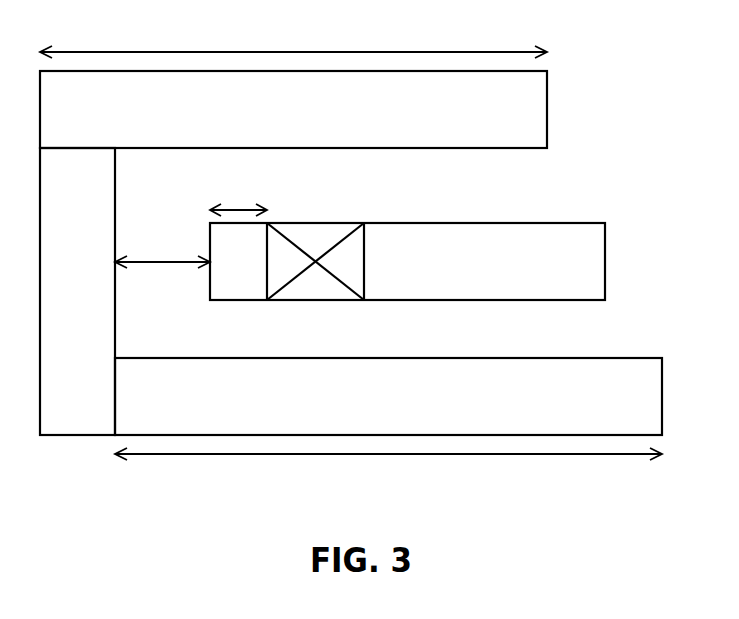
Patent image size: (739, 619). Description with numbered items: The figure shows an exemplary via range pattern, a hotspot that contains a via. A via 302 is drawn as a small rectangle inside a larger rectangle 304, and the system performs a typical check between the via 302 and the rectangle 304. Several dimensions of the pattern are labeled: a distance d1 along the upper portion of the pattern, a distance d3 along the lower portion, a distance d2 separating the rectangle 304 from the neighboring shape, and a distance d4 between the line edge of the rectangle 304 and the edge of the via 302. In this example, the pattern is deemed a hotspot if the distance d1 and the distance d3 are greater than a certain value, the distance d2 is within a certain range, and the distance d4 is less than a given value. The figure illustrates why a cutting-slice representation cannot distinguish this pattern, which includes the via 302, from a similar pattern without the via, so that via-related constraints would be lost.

The via 302 is at (323, 223).
The rectangle 304 is at (605, 260).
The distance d1 is at (293, 35).
The distance d2 is at (162, 244).
The distance d3 is at (388, 476).
The distance d4 is at (238, 191).